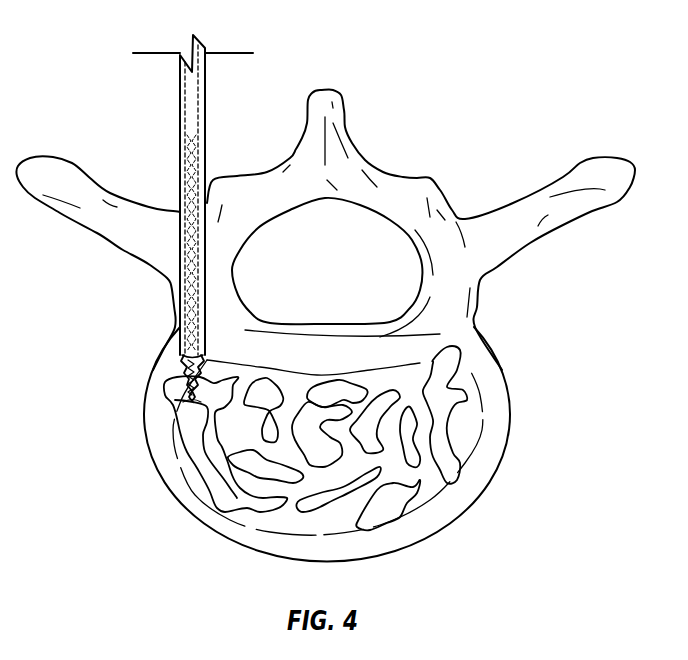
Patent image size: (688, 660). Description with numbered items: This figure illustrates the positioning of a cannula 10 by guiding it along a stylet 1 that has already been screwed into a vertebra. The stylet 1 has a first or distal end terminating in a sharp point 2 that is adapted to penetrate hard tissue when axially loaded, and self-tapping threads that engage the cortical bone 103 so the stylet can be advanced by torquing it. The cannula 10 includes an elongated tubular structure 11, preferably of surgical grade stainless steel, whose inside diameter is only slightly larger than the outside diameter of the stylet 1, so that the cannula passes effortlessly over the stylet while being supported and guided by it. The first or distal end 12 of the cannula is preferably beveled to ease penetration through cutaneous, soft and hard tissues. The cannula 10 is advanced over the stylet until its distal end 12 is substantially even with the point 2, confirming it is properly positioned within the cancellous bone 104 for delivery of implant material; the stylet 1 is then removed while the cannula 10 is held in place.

The cannula 10 is at (189, 234).
The stylet 1 is at (192, 125).
The tubular structure 11 is at (180, 158).
The distal end of the cannula 12 is at (170, 402).
The point 2 is at (188, 402).
The cortical bone 103 is at (150, 247).
The cancellous bone 104 is at (237, 495).